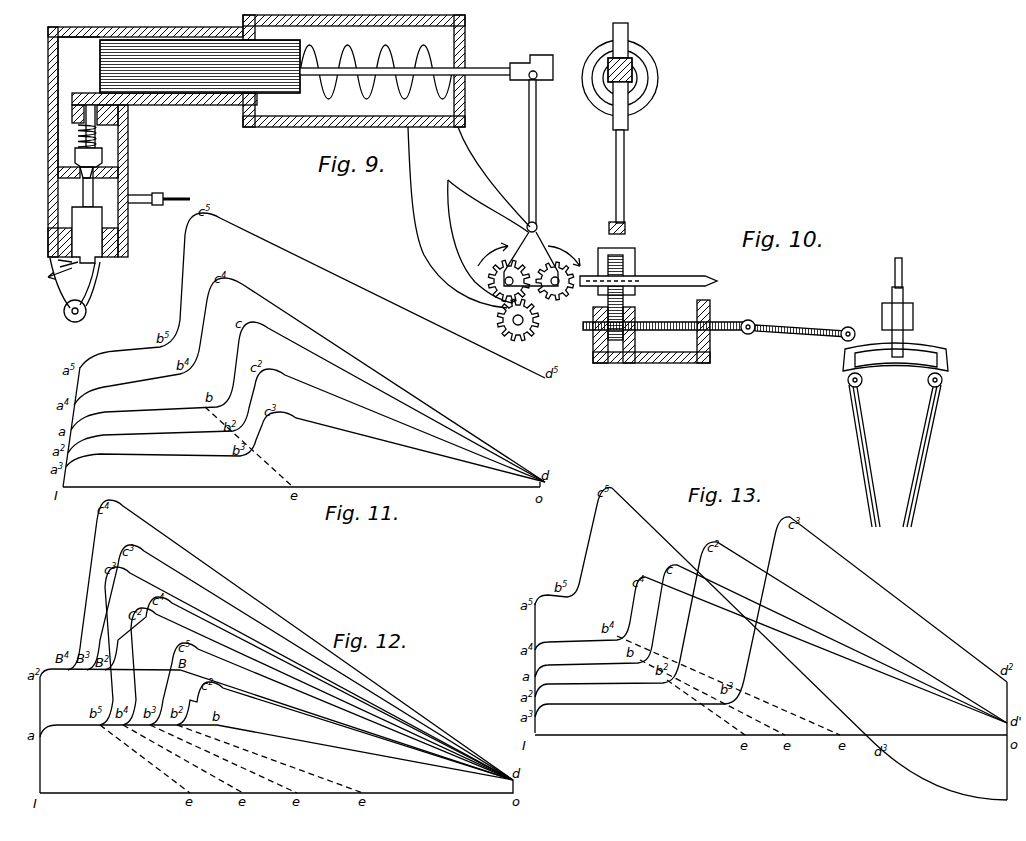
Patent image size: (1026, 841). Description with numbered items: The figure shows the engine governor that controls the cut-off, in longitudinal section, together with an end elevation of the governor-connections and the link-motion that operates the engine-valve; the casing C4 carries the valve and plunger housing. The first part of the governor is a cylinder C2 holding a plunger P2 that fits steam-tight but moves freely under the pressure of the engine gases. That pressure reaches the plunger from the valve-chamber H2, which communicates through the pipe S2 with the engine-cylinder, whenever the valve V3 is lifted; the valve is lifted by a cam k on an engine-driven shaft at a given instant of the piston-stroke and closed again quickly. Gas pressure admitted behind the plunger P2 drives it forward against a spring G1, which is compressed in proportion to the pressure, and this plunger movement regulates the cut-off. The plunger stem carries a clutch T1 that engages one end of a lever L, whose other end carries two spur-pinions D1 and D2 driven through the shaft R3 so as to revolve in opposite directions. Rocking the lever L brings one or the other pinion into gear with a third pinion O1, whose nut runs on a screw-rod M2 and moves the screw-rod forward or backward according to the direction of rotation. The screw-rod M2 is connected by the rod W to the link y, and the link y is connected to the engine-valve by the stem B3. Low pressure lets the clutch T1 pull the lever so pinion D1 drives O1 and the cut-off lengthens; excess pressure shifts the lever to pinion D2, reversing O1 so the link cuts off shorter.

In FIG. 9, the valve housing / cylinder casing C4 is at (143, 142).
In FIG. 9, the plunger P2 is at (200, 66).
In FIG. 9, the valve V3 is at (88, 141).
In FIG. 9, the valve-chamber H2 is at (80, 220).
In FIG. 9, the pipe S2 is at (159, 190).
In FIG. 9, the cam k is at (74, 290).
In FIG. 9, the cylinder C2 is at (354, 71).
In FIG. 10, the cylinder C2 is at (630, 78).
In FIG. 9, the spring G1 is at (376, 69).
In FIG. 9, the clutch T1 is at (426, 58).
In FIG. 10, the clutch T1 is at (620, 52).
In FIG. 9, the lever L is at (531, 183).
In FIG. 10, the lever L is at (623, 158).
In FIG. 9, the spur-pinion D1 is at (496, 272).
In FIG. 9, the spur-pinion D2 is at (558, 278).
In FIG. 10, the spur-pinion D2 is at (632, 286).
In FIG. 9, the spur-pinion O1 is at (519, 324).
In FIG. 10, the spur-pinion O1 is at (610, 345).
In FIG. 10, the shaft R3 is at (648, 271).
In FIG. 10, the screw-rod M2 is at (651, 331).
In FIG. 10, the rod W is at (719, 324).
In FIG. 10, the stem B3 is at (894, 307).
In FIG. 10, the link y is at (895, 425).